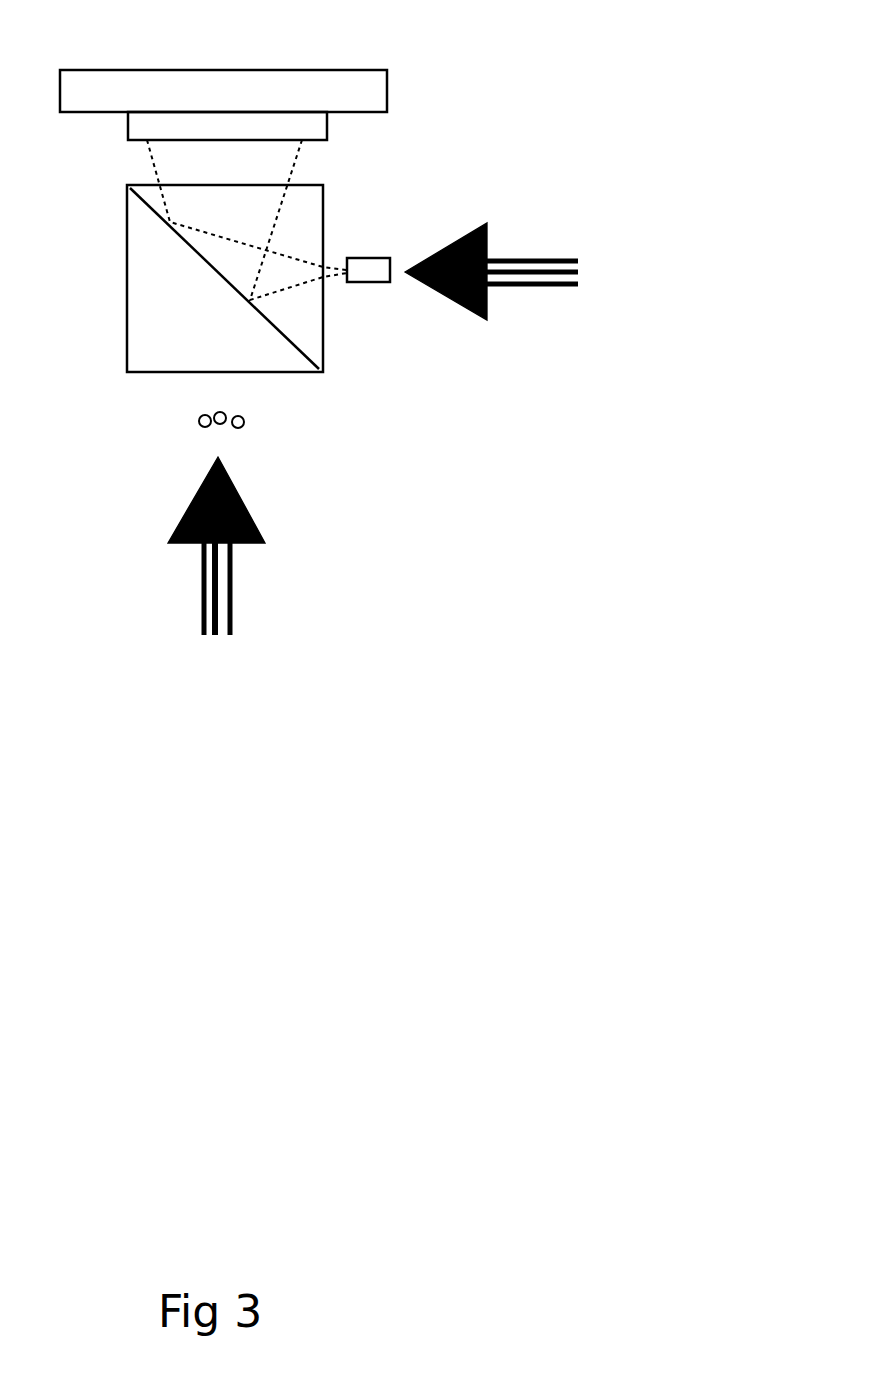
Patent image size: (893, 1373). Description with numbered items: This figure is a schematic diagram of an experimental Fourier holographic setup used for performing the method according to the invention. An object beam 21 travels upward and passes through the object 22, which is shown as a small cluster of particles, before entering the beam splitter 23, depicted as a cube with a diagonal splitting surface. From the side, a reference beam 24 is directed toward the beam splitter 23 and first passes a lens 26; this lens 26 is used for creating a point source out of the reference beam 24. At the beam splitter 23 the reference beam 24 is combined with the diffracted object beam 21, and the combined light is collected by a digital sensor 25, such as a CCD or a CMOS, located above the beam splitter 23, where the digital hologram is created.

The object beam 21 is at (188, 546).
The object 22 is at (178, 427).
The beam splitter 23 is at (190, 278).
The reference beam 24 is at (491, 265).
The digital sensor 25 is at (223, 70).
The lens 26 is at (368, 241).